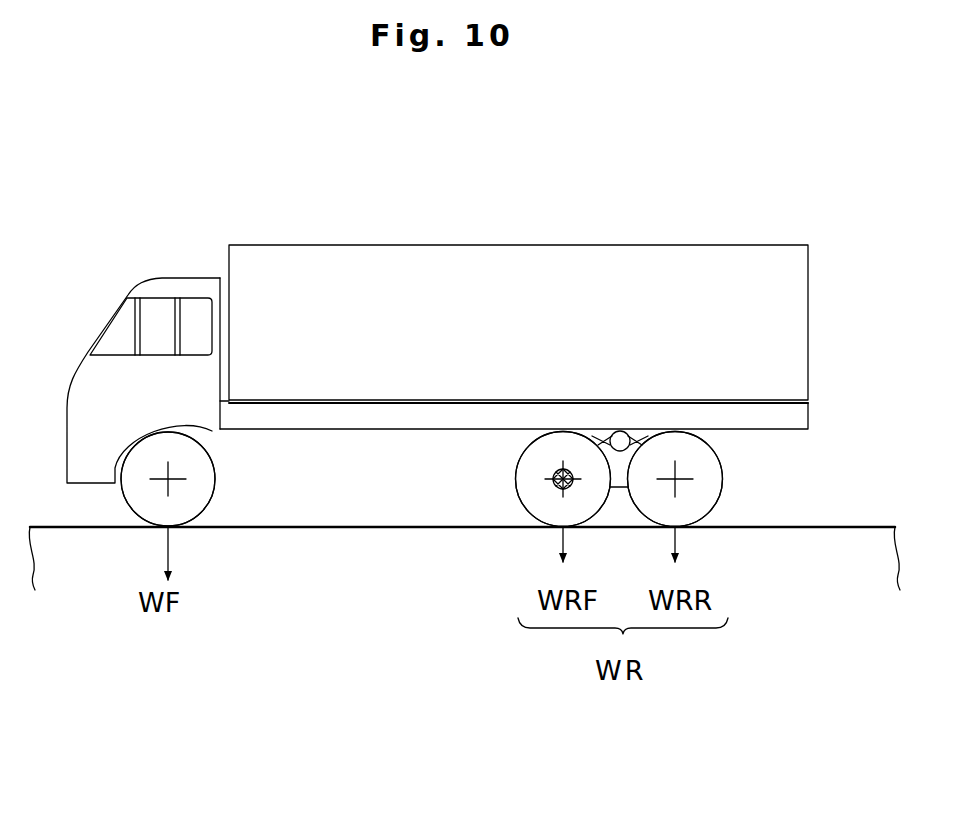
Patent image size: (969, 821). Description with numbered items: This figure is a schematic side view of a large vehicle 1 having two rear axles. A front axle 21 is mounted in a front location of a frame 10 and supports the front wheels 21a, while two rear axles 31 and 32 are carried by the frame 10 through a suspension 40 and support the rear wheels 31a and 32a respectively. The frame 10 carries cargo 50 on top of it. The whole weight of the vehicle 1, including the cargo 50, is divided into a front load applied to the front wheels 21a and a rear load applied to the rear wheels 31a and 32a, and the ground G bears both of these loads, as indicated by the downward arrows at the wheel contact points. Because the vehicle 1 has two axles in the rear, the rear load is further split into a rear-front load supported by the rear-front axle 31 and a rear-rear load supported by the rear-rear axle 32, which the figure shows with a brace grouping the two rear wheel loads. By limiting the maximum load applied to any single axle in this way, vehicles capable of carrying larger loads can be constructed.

The vehicle 1 is at (685, 180).
The frame 10 is at (793, 420).
The front axle 21 is at (172, 472).
The front wheels 21a is at (205, 497).
The rear-front axle 31 is at (555, 478).
The rear-front wheels 31a is at (540, 498).
The rear-rear axle 32 is at (673, 475).
The rear-rear wheels 32a is at (700, 498).
The suspension 40 is at (621, 425).
The cargo 50 is at (368, 323).
The ground G is at (340, 612).